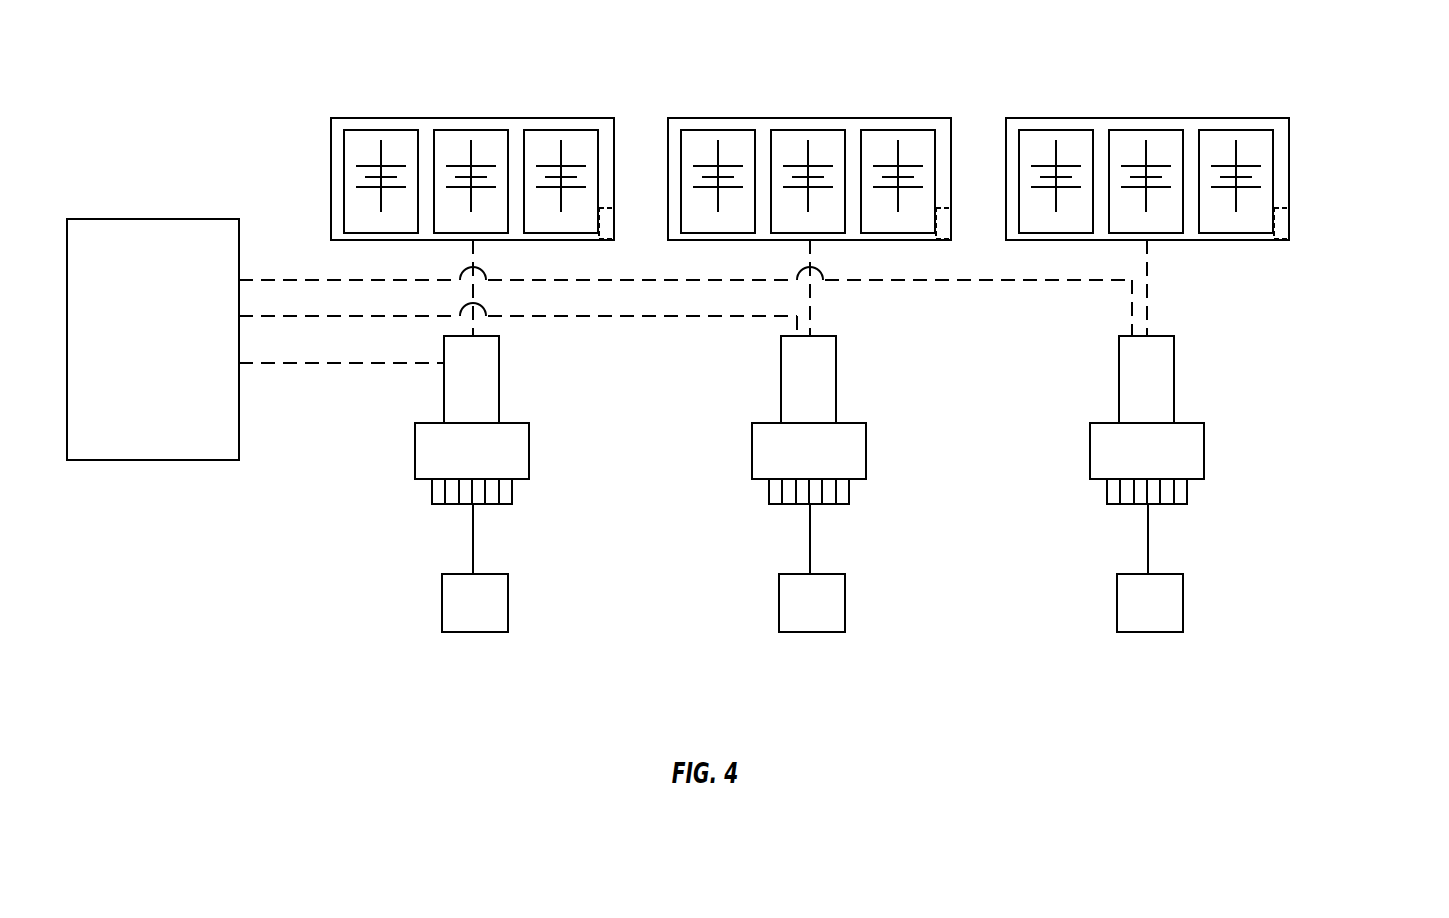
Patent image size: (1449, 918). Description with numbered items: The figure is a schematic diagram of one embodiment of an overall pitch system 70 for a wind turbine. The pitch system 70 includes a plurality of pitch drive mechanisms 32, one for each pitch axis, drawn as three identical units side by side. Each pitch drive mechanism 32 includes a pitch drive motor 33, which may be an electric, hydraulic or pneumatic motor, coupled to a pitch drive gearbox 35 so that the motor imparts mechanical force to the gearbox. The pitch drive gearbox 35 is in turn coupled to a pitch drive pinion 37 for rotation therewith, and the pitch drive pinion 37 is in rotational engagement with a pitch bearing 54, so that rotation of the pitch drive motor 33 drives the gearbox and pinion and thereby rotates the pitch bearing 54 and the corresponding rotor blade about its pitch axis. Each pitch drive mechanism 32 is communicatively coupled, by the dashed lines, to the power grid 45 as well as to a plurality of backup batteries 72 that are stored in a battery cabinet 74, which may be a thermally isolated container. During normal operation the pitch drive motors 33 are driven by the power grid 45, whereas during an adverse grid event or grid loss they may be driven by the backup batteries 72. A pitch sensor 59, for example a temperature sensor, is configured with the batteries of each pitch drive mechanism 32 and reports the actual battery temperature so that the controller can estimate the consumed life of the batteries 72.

The pitch adjustment mechanism 32 is at (582, 396).
The pitch drive motor 33 is at (444, 381).
The pitch drive gearbox 35 is at (415, 447).
The pitch drive pinion 37 is at (438, 492).
The power grid 45 is at (142, 383).
The pitch bearing 54 is at (462, 618).
The pitch sensor 59 is at (614, 223).
The pitch system 70 is at (1400, 203).
The backup battery 72 is at (447, 142).
The battery cabinet 74 is at (483, 118).